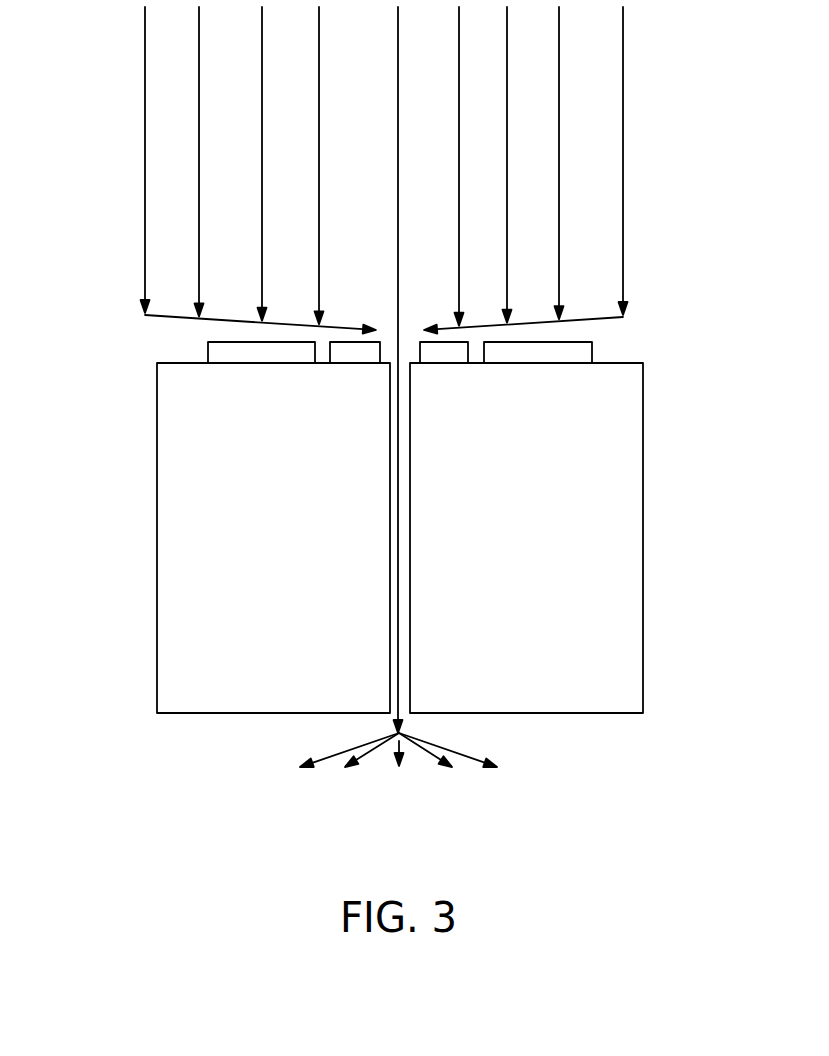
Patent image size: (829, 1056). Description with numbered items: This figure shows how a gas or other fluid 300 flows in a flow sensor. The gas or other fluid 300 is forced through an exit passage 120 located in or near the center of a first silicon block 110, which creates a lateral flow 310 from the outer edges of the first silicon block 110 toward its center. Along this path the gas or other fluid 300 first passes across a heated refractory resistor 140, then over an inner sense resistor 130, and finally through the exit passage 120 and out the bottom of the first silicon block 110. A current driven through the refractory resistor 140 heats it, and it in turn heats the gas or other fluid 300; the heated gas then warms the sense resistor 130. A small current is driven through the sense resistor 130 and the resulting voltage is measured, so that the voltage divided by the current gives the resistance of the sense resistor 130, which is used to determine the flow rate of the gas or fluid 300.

The gas or other fluid 300 is at (145, 132).
The lateral flow 310 is at (538, 322).
The first silicon block 110 is at (593, 478).
The exit passage 120 is at (390, 715).
The sense resistor 130 is at (455, 351).
The refractory resistor 140 is at (220, 358).